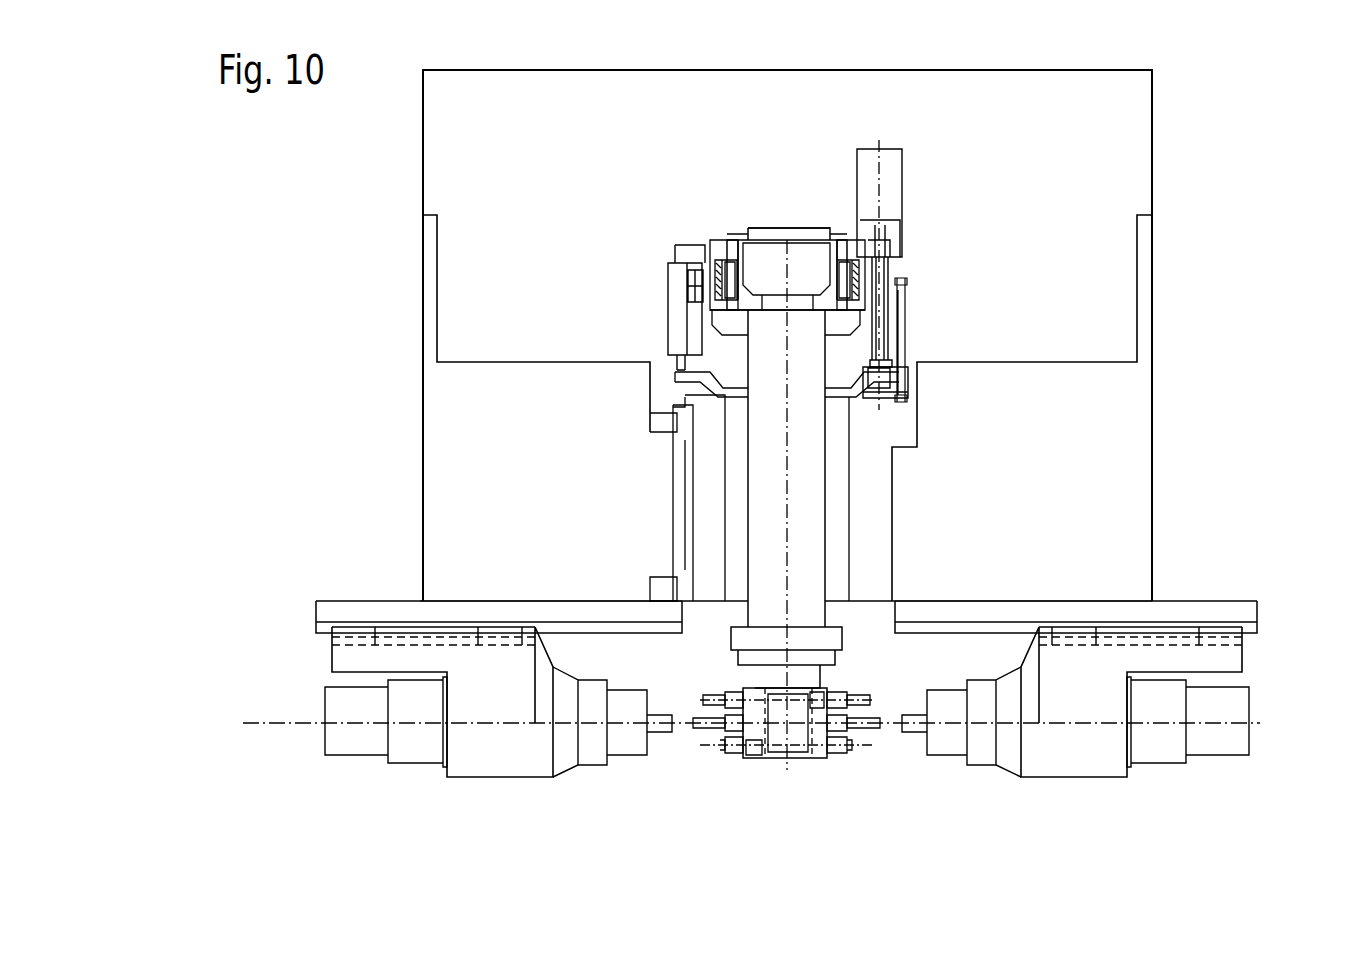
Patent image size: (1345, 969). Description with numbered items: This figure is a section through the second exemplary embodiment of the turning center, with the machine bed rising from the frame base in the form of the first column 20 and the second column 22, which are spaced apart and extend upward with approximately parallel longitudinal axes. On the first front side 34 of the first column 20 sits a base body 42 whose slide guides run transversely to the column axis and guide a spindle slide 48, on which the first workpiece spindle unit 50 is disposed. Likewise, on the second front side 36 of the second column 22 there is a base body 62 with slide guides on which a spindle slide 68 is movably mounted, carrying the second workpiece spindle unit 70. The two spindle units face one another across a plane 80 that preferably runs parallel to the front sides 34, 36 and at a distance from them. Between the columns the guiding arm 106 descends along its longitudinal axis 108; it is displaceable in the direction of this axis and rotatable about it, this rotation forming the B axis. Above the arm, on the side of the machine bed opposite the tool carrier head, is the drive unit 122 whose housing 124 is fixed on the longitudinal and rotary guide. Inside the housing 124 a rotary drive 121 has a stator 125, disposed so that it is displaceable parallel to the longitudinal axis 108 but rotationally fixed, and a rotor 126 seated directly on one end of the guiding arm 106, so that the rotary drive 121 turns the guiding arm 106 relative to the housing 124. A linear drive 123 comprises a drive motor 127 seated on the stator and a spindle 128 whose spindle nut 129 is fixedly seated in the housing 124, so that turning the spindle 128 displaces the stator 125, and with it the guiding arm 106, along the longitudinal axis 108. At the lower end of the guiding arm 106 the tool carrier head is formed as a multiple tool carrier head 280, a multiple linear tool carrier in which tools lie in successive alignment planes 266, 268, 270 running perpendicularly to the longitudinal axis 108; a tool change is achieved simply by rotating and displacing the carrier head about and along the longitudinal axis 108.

The first column 20 is at (466, 523).
The second column 22 is at (1117, 432).
The first front side 34 is at (503, 603).
The second front side 36 is at (1075, 607).
The base body 42 is at (345, 612).
The spindle slide 48 is at (345, 660).
The first workpiece spindle unit 50 is at (489, 758).
The base body 62 is at (1225, 612).
The spindle slide 68 is at (1225, 660).
The second workpiece spindle unit 70 is at (1081, 758).
The plane 80 is at (263, 733).
The guiding arm 106 is at (807, 562).
The longitudinal axis 108 is at (787, 510).
The rotary drive 121 is at (798, 262).
The drive unit 122 is at (772, 216).
The linear drive 123 is at (890, 318).
The housing 124 is at (688, 375).
The stator 125 is at (712, 253).
The rotor 126 is at (720, 262).
The drive motor 127 is at (885, 162).
The spindle 128 is at (902, 343).
The spindle nut 129 is at (895, 375).
The alignment plane 266 is at (760, 747).
The alignment plane 268 is at (778, 723).
The alignment plane 270 is at (797, 700).
The multiple tool carrier head 280 is at (850, 770).